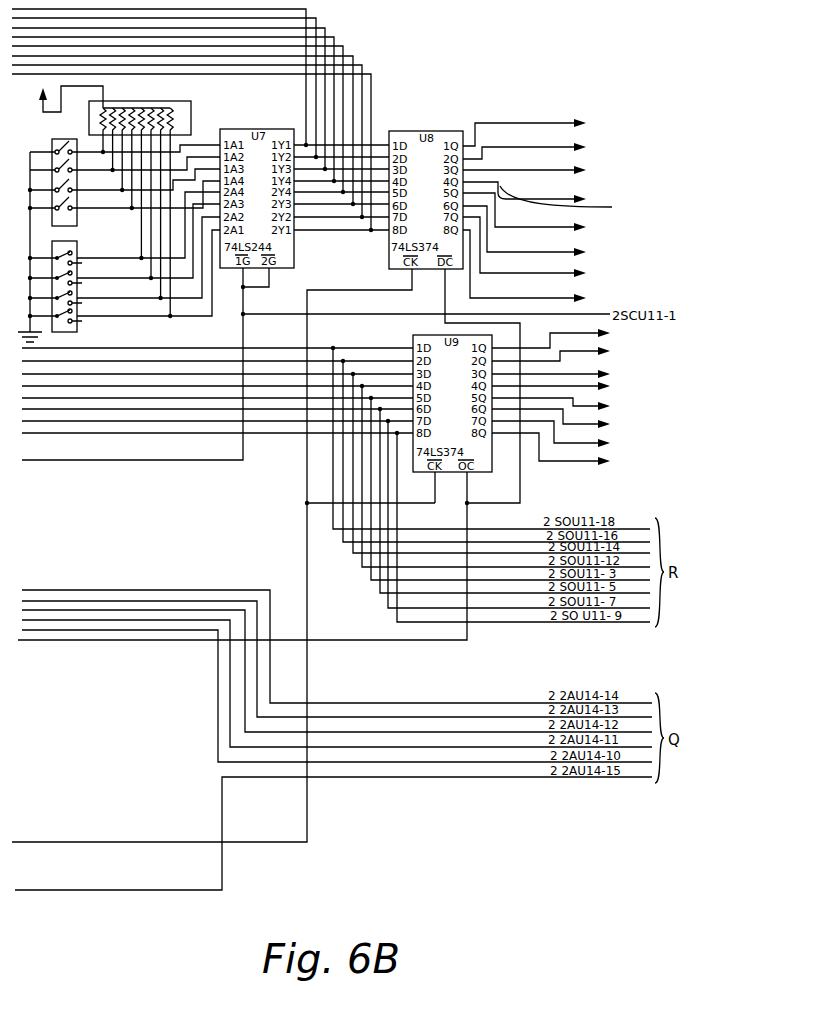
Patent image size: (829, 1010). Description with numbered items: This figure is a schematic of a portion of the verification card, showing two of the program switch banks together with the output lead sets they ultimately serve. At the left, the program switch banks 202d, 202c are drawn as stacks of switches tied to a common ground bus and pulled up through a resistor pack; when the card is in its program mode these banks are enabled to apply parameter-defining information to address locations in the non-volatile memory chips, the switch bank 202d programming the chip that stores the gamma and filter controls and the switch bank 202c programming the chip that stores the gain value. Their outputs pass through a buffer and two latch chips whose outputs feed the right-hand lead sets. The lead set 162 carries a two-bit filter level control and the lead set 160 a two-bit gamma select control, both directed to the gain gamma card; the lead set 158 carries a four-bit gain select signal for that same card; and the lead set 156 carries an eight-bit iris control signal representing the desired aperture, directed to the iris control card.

The program switch bank 202d is at (77, 220).
The program switch bank 202c is at (77, 327).
The lead set 162 is at (668, 153).
The lead set 160 is at (670, 207).
The lead set 158 is at (668, 303).
The lead set 156 is at (668, 470).